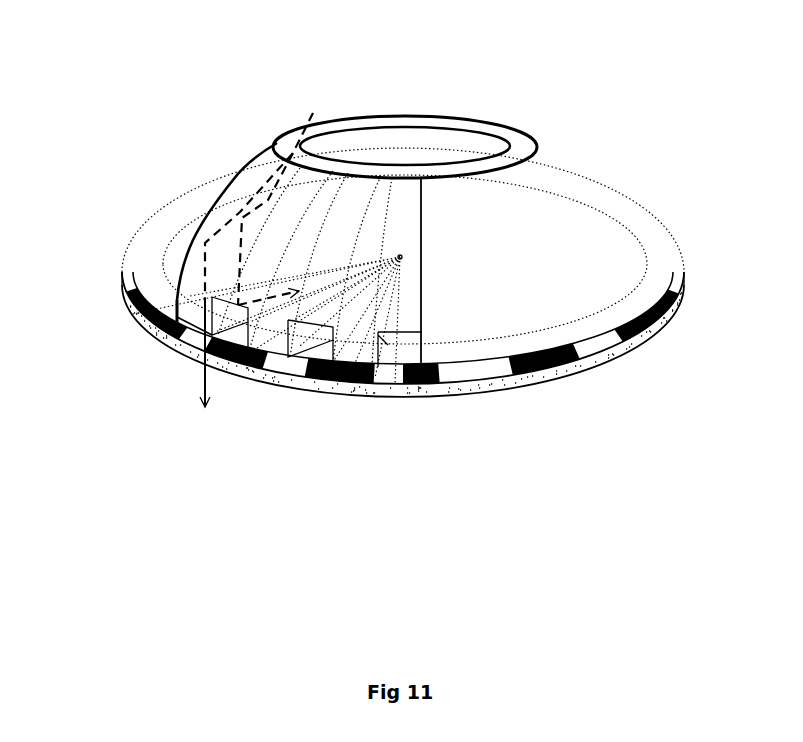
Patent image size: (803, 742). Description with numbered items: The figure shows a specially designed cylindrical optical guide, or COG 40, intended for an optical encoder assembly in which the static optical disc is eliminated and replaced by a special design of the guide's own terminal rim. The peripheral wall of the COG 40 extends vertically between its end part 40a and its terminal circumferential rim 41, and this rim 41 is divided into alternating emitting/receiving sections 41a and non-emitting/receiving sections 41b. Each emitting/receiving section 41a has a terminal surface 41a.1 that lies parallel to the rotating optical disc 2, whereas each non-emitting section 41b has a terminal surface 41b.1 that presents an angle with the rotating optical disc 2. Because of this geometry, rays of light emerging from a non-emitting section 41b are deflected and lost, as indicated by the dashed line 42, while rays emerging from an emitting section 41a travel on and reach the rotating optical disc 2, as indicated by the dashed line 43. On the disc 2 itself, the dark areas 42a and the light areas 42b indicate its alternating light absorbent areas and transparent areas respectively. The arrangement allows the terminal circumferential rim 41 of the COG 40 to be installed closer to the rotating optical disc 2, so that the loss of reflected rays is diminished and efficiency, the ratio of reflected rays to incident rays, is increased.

The rotating optical disc 2 is at (557, 377).
The cylindrical optical guide 40 is at (575, 114).
The end part 40a is at (457, 121).
The terminal circumferential rim 41 is at (660, 249).
The emitting/receiving section 41a is at (395, 336).
The terminal surface of emitting/receiving section 41a.1 is at (365, 349).
The non-emitting/receiving section 41b is at (404, 360).
The terminal surface of non-emitting section 41b.1 is at (413, 370).
The dashed line showing deflected rays 42 is at (273, 309).
The dark areas 42a is at (137, 317).
The light areas 42b is at (175, 338).
The dashed line showing rays reaching disc 43 is at (203, 388).